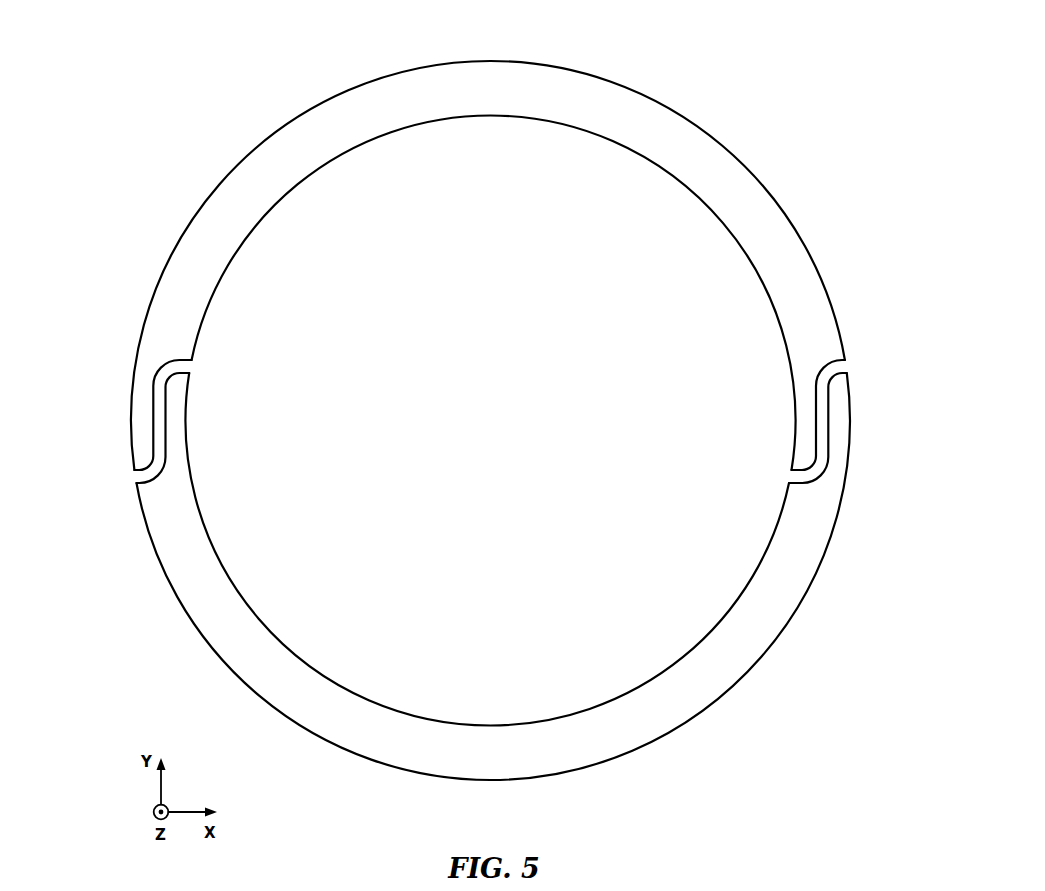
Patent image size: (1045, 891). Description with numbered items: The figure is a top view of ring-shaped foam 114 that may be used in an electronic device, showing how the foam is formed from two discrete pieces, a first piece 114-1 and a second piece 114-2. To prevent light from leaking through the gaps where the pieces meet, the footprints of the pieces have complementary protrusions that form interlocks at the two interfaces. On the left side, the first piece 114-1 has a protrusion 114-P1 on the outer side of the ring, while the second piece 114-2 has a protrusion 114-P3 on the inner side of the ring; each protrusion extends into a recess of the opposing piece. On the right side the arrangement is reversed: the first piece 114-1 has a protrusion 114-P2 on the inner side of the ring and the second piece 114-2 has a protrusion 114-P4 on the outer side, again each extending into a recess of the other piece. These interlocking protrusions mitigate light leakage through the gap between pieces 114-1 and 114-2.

The foam 114 is at (202, 68).
The first piece 114-1 is at (727, 170).
The second piece 114-2 is at (790, 583).
The protrusion 114-P1 is at (132, 415).
The protrusion 114-P2 is at (797, 418).
The protrusion 114-P3 is at (177, 423).
The protrusion 114-P4 is at (838, 415).